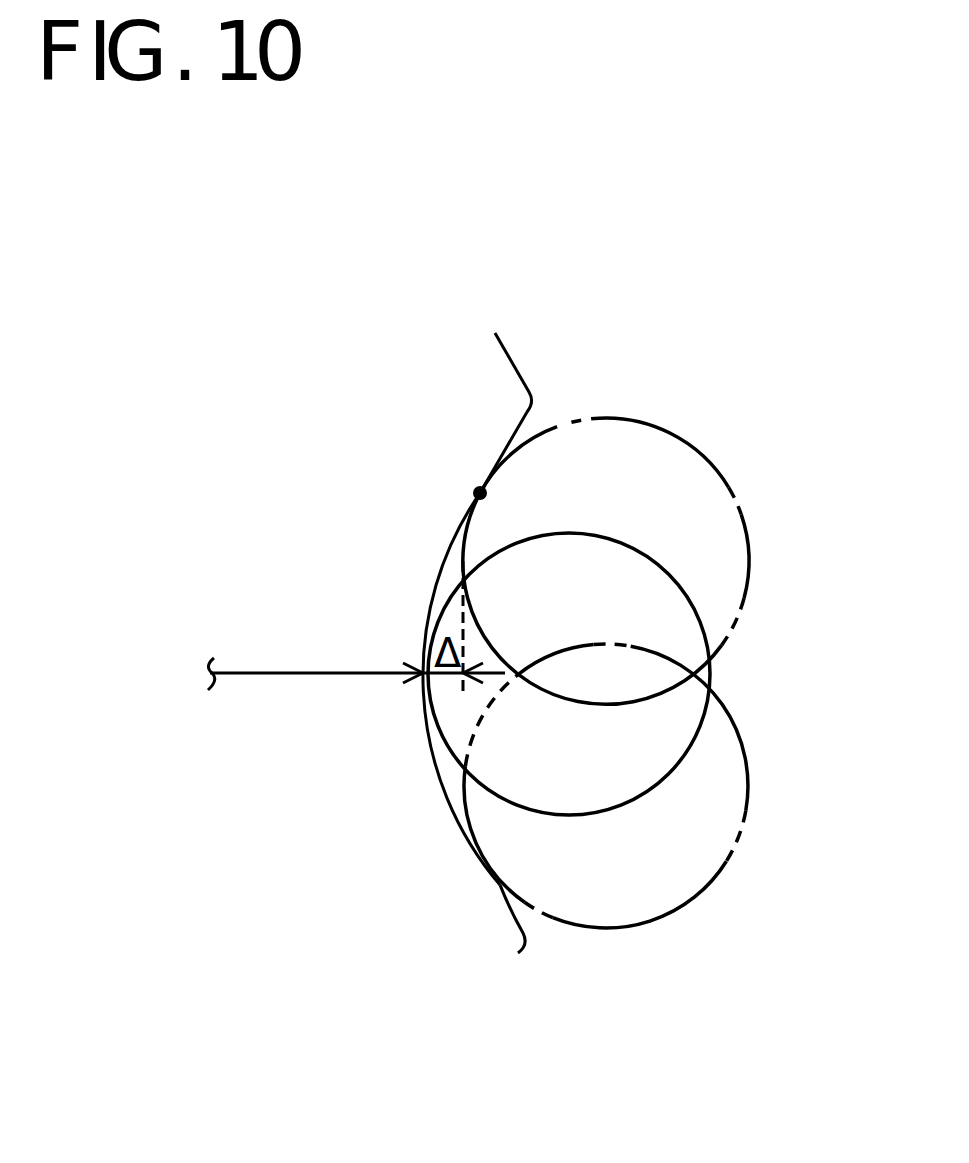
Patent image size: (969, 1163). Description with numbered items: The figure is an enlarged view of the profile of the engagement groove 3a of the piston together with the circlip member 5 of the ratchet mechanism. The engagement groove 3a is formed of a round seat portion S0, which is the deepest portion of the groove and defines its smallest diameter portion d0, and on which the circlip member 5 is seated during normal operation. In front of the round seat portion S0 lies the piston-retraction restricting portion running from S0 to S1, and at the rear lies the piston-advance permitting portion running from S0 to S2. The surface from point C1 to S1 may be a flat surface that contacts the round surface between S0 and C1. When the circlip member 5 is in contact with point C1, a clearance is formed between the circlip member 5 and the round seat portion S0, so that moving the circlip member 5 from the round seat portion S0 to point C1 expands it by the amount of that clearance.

The engagement groove 3a is at (447, 772).
The circlip member 5 is at (738, 670).
The piston-retraction restricting portion end point S1 is at (606, 518).
The piston-advance permitting portion end point S2 is at (606, 808).
The contact point C1 is at (452, 477).
The smallest diameter portion d0 is at (315, 658).
The round seat portion S0 is at (436, 701).